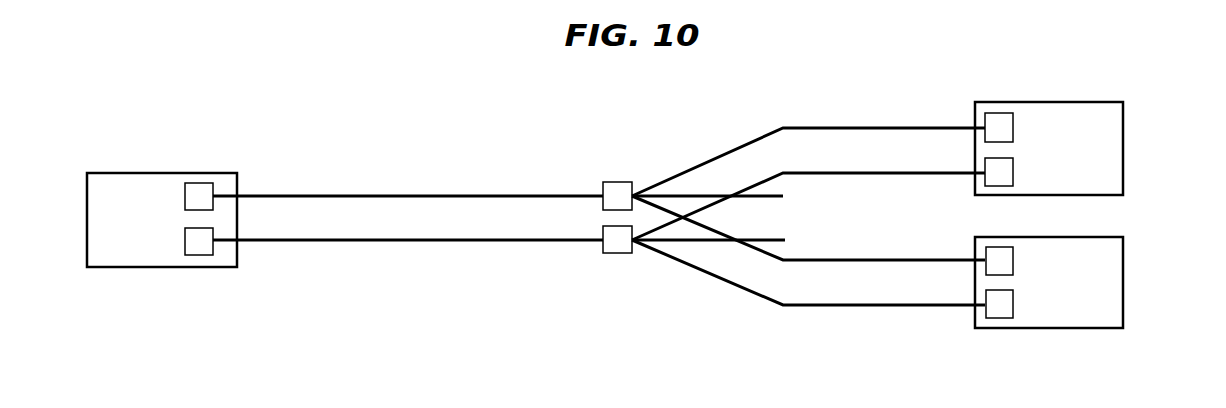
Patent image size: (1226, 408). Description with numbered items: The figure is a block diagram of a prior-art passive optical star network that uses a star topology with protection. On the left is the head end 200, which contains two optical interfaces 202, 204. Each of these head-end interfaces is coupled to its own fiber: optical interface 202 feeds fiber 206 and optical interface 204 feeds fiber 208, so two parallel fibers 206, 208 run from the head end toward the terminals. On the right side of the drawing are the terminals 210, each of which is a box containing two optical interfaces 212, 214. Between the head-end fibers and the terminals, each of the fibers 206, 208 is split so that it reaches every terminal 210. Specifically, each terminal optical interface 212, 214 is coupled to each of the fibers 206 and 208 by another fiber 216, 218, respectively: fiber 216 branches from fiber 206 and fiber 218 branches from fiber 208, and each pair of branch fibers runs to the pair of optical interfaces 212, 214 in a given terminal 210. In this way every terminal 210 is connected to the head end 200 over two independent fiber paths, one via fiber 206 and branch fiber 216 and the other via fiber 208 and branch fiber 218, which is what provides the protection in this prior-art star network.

The head end 200 is at (157, 173).
The optical interface 202 is at (197, 183).
The optical interface 204 is at (198, 257).
The fiber 206 is at (475, 195).
The fiber 208 is at (477, 240).
The terminal 210 is at (1123, 145).
The optical interface 212 is at (997, 113).
The optical interface 214 is at (983, 180).
The fiber 216 is at (808, 127).
The fiber 218 is at (880, 172).